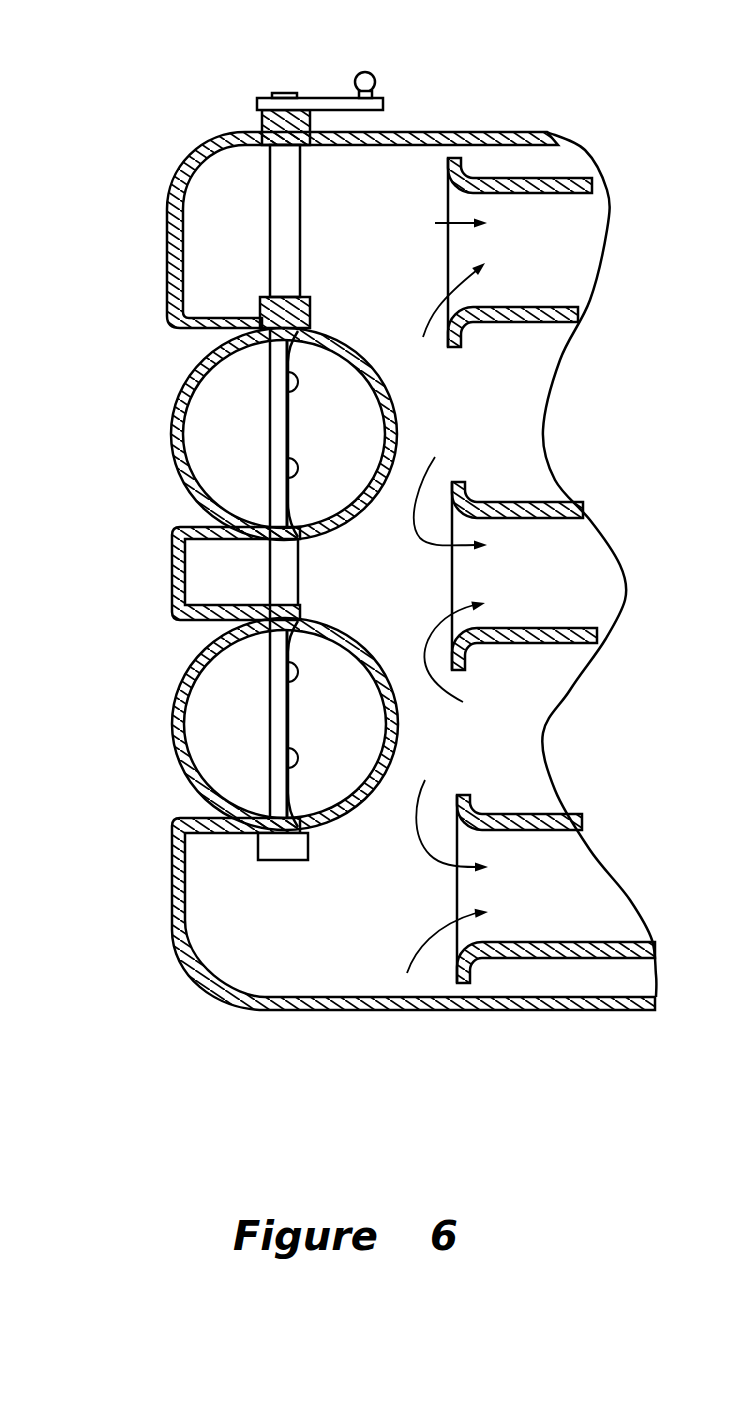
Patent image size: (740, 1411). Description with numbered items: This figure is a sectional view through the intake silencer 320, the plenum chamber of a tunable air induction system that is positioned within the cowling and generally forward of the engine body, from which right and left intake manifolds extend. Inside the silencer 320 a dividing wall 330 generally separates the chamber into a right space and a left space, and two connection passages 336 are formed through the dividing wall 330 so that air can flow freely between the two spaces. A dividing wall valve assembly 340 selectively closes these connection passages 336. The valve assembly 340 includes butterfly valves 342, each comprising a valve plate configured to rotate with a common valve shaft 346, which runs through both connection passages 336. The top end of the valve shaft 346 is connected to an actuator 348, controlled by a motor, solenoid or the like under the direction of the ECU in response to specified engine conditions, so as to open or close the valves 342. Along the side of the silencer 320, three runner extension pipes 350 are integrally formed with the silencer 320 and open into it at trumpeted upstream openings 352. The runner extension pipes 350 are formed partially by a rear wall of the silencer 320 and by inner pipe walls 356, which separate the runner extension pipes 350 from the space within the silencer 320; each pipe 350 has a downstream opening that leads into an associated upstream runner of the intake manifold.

The intake silencer 320 is at (176, 154).
The dividing wall 330 is at (222, 258).
The connection passages 336 is at (200, 390).
The dividing wall valve assembly 340 is at (247, 431).
The butterfly valves 342 is at (250, 461).
The valve shaft 346 is at (268, 202).
The actuator 348 is at (333, 97).
The runner extension pipes 350 is at (567, 167).
The upstream opening 352 is at (452, 188).
The inner pipe walls 356 is at (500, 500).